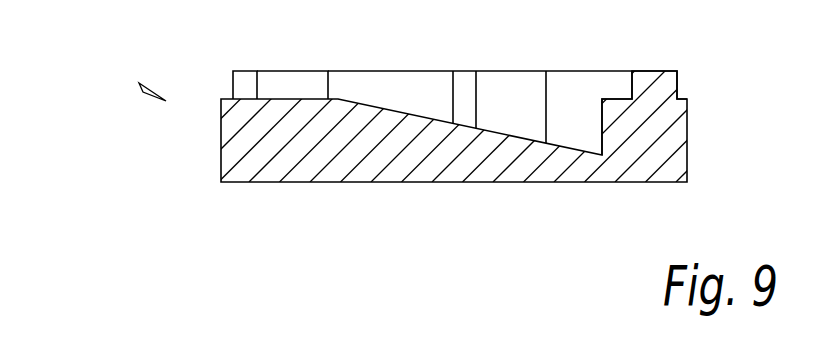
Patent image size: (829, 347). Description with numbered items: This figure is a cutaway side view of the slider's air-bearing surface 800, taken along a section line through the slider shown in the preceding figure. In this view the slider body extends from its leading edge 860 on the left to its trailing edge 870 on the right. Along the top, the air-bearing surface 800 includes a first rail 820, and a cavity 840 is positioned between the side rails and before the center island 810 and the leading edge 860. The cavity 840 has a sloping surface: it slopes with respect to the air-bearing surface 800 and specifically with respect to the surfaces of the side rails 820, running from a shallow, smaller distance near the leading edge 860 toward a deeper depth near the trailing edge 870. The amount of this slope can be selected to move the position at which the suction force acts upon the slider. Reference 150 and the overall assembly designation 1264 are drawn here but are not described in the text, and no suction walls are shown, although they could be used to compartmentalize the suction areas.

The sensor assembly 1264 is at (143, 92).
The air-bearing surface 800 is at (255, 78).
The first rail 820 is at (314, 82).
The cavity 840 is at (364, 87).
The center island 810 is at (644, 77).
The top surface 150 is at (678, 72).
The leading edge 860 is at (221, 142).
The trailing edge 870 is at (687, 142).